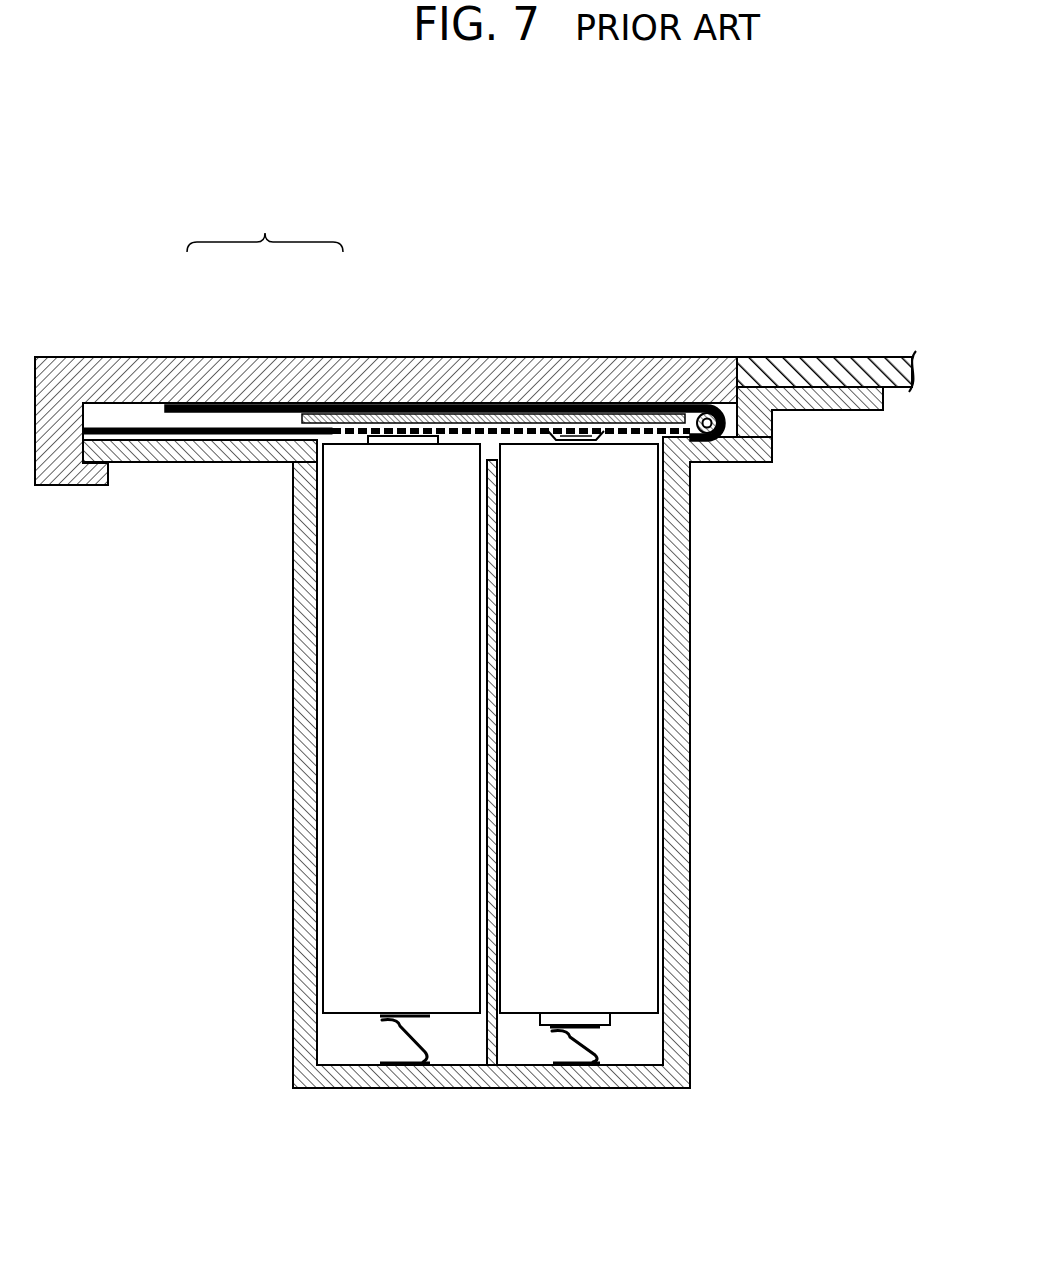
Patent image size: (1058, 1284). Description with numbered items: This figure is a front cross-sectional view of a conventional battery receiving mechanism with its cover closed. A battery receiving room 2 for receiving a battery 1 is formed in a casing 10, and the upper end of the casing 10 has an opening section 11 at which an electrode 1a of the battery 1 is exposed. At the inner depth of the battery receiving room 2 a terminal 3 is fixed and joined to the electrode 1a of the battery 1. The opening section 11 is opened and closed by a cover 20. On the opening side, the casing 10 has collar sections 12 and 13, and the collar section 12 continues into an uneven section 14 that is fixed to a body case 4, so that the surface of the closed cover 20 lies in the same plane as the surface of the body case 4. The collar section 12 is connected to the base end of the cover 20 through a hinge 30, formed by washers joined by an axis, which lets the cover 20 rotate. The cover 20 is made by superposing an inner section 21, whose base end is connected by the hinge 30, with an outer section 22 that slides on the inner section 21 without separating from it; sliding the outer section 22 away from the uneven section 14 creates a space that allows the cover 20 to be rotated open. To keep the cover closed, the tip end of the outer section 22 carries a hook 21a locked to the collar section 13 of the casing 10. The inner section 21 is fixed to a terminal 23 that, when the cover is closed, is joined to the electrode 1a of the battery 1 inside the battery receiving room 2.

The battery 1 is at (347, 820).
The electrode 1a is at (621, 436).
The battery receiving room 2 is at (462, 1042).
The terminal 3 is at (400, 1042).
The body case 4 is at (895, 357).
The casing 10 is at (682, 665).
The opening section 11 is at (457, 428).
The collar section 12 is at (718, 456).
The collar section 13 is at (222, 468).
The uneven section 14 is at (760, 425).
The cover 20 is at (265, 221).
The inner section 21 is at (291, 404).
The hook 21a is at (91, 487).
The outer section 22 is at (230, 382).
The terminal 23 is at (512, 416).
The hinge 30 is at (715, 410).